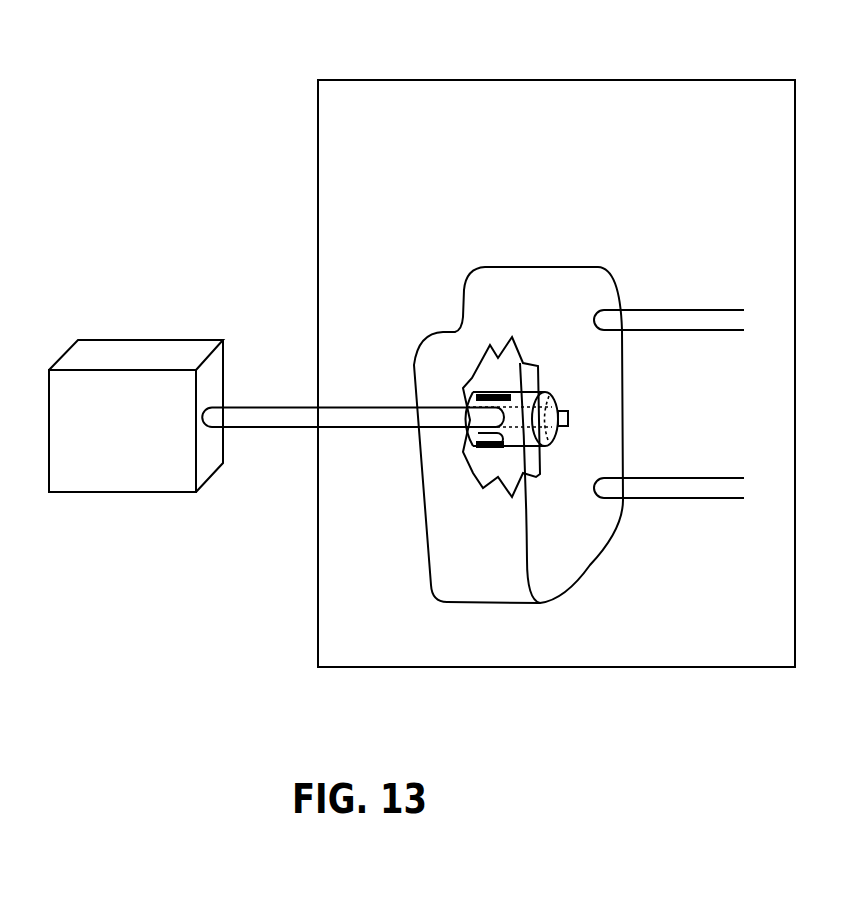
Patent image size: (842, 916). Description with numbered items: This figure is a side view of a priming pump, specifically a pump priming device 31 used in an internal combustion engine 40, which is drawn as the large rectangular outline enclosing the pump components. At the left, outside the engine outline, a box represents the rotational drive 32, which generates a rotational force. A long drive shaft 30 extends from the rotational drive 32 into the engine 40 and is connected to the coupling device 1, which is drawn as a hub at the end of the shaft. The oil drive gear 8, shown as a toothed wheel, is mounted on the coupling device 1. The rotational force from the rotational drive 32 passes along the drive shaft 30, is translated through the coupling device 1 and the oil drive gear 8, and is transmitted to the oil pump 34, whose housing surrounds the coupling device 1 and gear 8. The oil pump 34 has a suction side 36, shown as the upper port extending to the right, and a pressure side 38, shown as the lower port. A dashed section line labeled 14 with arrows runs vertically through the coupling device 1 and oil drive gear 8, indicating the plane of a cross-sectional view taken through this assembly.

The coupling device 1 is at (508, 392).
The oil drive gear 8 is at (477, 472).
The section line 14- 14 is at (508, 166).
The drive shaft 30 is at (255, 408).
The pump priming device 31 is at (216, 113).
The rotational drive 32 is at (87, 338).
The oil pump 34 is at (573, 540).
The suction side 36 is at (613, 315).
The pressure side 38 is at (603, 490).
The internal combustion engine 40 is at (620, 80).